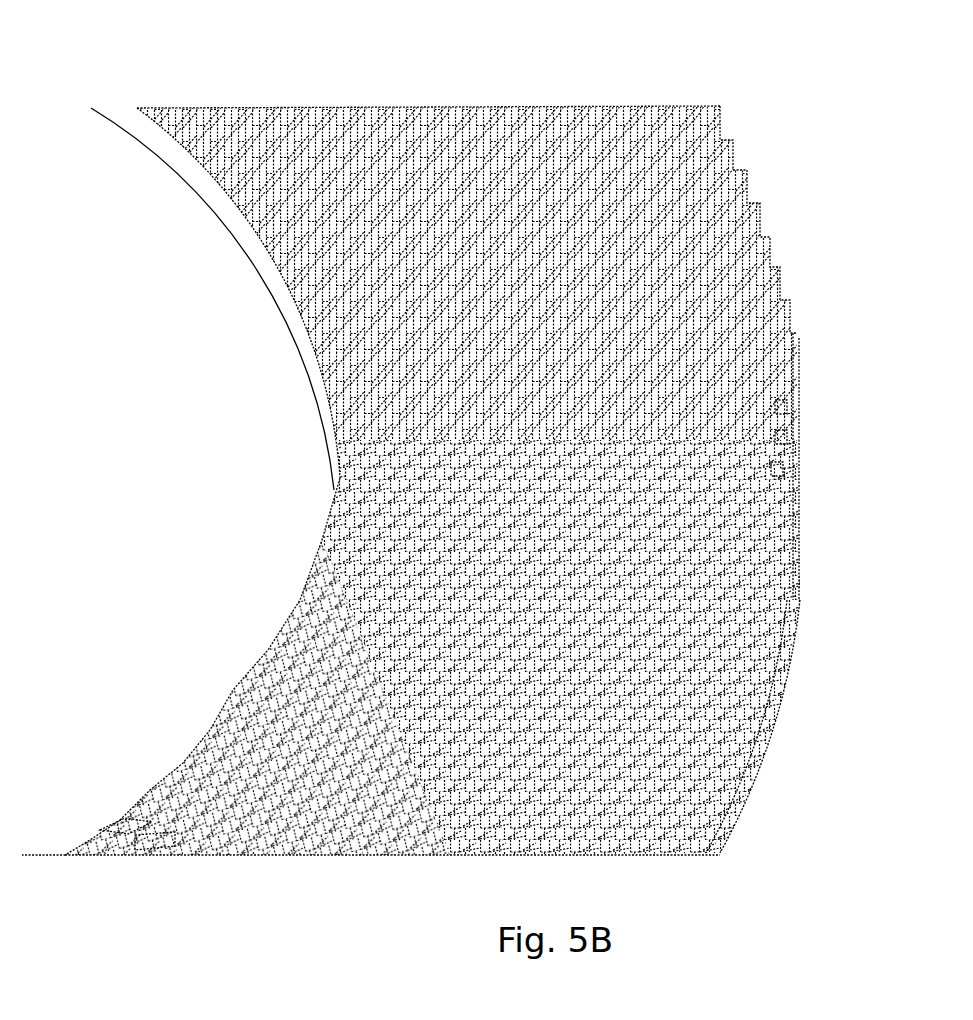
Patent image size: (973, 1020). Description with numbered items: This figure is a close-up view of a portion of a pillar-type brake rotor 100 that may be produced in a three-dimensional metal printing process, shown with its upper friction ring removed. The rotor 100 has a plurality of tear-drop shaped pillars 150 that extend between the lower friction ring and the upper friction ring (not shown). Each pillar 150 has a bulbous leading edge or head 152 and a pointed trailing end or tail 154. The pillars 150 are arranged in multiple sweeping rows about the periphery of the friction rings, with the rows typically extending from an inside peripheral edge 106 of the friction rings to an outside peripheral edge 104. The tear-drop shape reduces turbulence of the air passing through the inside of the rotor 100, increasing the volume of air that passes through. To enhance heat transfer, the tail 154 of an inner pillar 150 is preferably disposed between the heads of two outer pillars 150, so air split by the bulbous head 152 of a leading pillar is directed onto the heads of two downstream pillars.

The pillar-type brake rotor 100 is at (847, 157).
The outside peripheral edge 104 is at (780, 683).
The inside peripheral edge 106 is at (290, 337).
The tear-drop shaped pillar 150 is at (782, 472).
The bulbous head 152 is at (118, 828).
The tail 154 is at (150, 838).